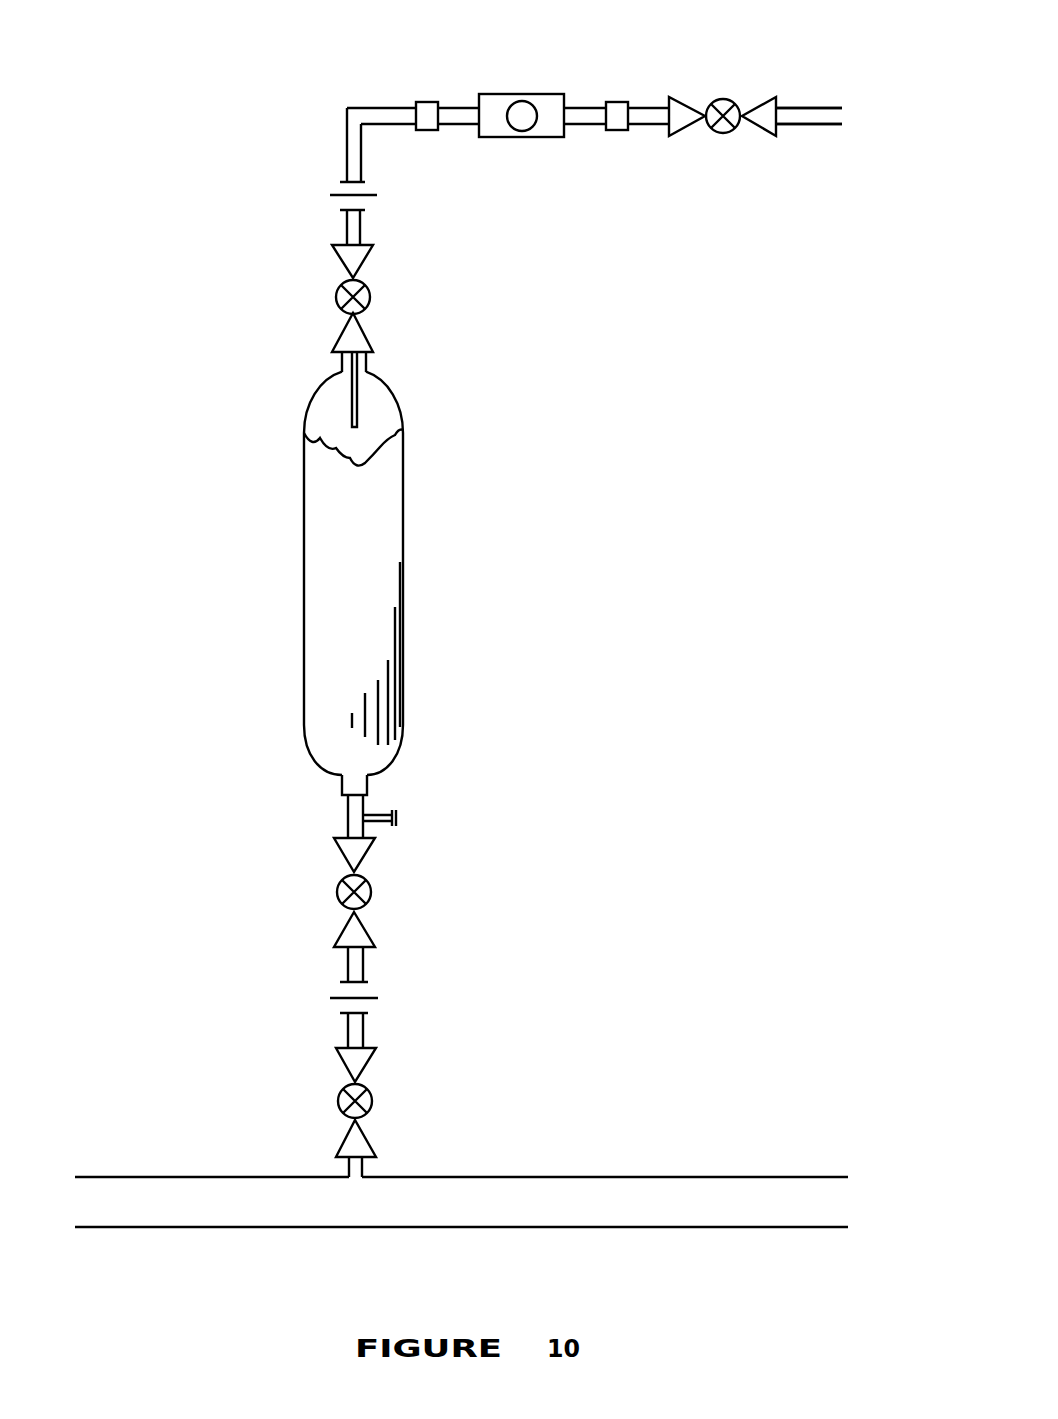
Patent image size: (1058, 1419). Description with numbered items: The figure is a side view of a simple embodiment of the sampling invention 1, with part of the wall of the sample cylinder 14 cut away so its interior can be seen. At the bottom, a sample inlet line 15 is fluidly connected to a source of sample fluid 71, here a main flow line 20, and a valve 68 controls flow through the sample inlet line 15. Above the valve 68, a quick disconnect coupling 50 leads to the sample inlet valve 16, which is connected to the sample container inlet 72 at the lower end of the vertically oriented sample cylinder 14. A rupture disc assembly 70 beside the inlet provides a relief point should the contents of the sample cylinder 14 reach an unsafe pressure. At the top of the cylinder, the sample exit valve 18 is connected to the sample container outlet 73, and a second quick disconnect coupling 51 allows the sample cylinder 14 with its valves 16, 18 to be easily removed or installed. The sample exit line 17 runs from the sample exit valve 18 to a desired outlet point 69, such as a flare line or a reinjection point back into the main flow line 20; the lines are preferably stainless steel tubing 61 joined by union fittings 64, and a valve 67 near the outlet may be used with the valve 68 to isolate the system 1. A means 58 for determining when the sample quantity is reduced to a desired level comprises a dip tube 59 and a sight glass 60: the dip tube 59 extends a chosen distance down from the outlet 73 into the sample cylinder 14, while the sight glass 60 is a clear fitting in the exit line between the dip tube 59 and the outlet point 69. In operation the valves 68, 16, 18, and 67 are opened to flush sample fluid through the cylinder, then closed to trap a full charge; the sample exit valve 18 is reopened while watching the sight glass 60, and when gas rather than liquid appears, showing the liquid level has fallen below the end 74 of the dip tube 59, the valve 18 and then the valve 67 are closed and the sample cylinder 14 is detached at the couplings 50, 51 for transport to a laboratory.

The invention 1 is at (505, 551).
The sample cylinder 14 is at (403, 663).
The sample inlet line 15 is at (363, 1032).
The sample inlet valve 16 is at (371, 892).
The sample exit line 17 is at (347, 152).
The sample exit valve 18 is at (336, 297).
The main flow line 20 is at (733, 1177).
The quick disconnect coupling 50 is at (335, 998).
The quick disconnect coupling 51 is at (335, 195).
The means for determining sample fluid level 58 is at (365, 385).
The dip tube 59 is at (358, 400).
The sight glass 60 is at (522, 94).
The stainless steel tubing 61 is at (360, 107).
The union fitting 64 is at (426, 102).
The valve 67 is at (723, 97).
The valve 68 is at (372, 1101).
The desired outlet point 69 is at (842, 113).
The rupture disc assembly 70 is at (394, 810).
The source of sample fluid 71 is at (533, 1177).
The sample container inlet 72 is at (342, 783).
The sample container outlet 73 is at (342, 361).
The end of dip tube 74 is at (357, 427).